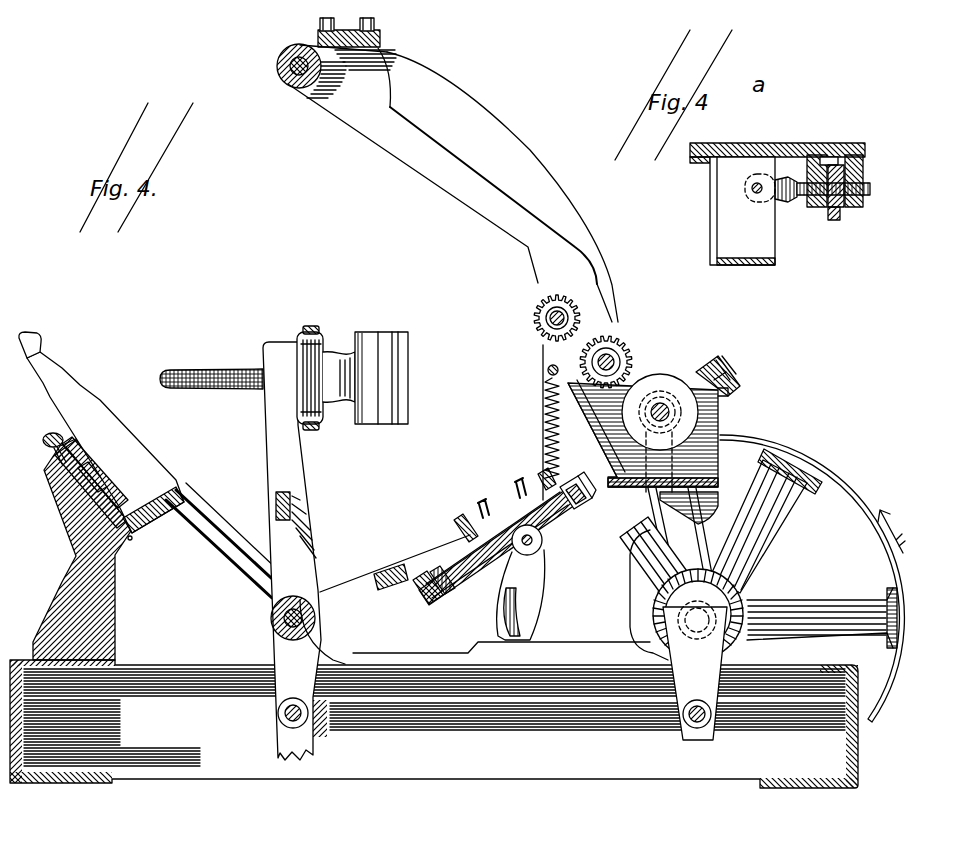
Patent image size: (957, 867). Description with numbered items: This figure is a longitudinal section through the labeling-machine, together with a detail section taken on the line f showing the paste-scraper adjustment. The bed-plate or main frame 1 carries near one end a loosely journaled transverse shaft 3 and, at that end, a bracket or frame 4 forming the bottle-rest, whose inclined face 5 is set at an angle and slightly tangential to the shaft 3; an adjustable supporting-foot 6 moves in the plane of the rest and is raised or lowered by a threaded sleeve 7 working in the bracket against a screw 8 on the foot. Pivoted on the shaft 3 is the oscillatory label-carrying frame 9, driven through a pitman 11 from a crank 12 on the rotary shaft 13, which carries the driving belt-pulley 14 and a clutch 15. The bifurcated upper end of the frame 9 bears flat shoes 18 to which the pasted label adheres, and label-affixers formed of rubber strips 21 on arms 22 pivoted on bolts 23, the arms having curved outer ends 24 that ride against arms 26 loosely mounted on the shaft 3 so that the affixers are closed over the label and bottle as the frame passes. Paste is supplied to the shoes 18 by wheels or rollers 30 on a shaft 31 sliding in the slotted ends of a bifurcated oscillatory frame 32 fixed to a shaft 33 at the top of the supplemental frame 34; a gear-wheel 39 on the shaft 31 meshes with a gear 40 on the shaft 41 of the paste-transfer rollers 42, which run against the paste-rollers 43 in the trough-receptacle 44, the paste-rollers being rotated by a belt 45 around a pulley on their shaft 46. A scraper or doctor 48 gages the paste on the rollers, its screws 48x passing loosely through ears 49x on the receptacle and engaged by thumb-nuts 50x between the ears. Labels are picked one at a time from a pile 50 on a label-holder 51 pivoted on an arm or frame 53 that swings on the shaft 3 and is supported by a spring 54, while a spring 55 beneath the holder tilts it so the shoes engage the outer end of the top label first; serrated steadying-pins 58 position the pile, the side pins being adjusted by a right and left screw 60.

In FIG. 4, the bed-plate or main frame 1 is at (434, 724).
In FIG. 4, the transverse shaft 3 is at (272, 622).
In FIG. 4, the bracket or frame 4 is at (70, 614).
In FIG. 4, the inclined face 5 is at (95, 470).
In FIG. 4, the adjustable supporting-foot 6 is at (146, 525).
In FIG. 4, the threaded sleeve 7 is at (50, 456).
In FIG. 4, the screw 8 is at (88, 528).
In FIG. 4, the oscillatory label-carrying frame 9 is at (284, 486).
In FIG. 4, the pitman 11 is at (506, 722).
In FIG. 4, the crank 12 is at (695, 673).
In FIG. 4, the rotary shaft 13 is at (738, 610).
In FIG. 4, the driving belt-pulley 14 is at (838, 500).
In FIG. 4, the clutch 15 is at (704, 620).
In FIG. 4, the shoes 18 is at (300, 350).
In FIG. 4, the strips 21 is at (400, 375).
In FIG. 4, the arms 22 is at (348, 404).
In FIG. 4, the bolts 23 is at (322, 334).
In FIG. 4, the curved outer ends 24 is at (180, 372).
In FIG. 4, the arms 26 is at (222, 574).
In FIG. 4, the paste wheels or rollers 30 is at (538, 342).
In FIG. 4, the shaft 31 is at (550, 320).
In FIG. 4, the bifurcated oscillatory frame 32 is at (442, 151).
In FIG. 4, the shaft 33 is at (285, 74).
In FIG. 4, the supplemental frame 34 is at (502, 187).
In FIG. 4, the gear-wheel 39 is at (540, 303).
In FIG. 4, the gear 40 is at (628, 352).
In FIG. 4, the shaft 41 is at (612, 356).
In FIG. 4, the paste-transfer rollers 42 is at (612, 344).
In FIG. 4, the paste-rollers 43 is at (668, 386).
In FIG. 4, the trough-receptacle 44 is at (722, 428).
In FIG. 4a, the trough-receptacle 44 is at (778, 150).
In FIG. 4, the belt 45 is at (660, 514).
In FIG. 4, the shaft 46 is at (668, 400).
In FIG. 4a, the scraper or doctor 48 is at (742, 211).
In FIG. 4a, the screws 48x is at (872, 190).
In FIG. 4a, the ears 49x is at (860, 210).
In FIG. 4, the pile of labels 50 is at (458, 528).
In FIG. 4a, the thumb-nuts 50x is at (835, 224).
In FIG. 4, the label-holder 51 is at (454, 566).
In FIG. 4, the arm or frame 53 is at (362, 588).
In FIG. 4, the spring 54 is at (544, 424).
In FIG. 4, the spring 55 is at (548, 534).
In FIG. 4, the serrated steadying-pins 58 is at (540, 478).
In FIG. 4, the right and left screw 60 is at (534, 546).
In FIG. 4, the section line f is at (718, 382).